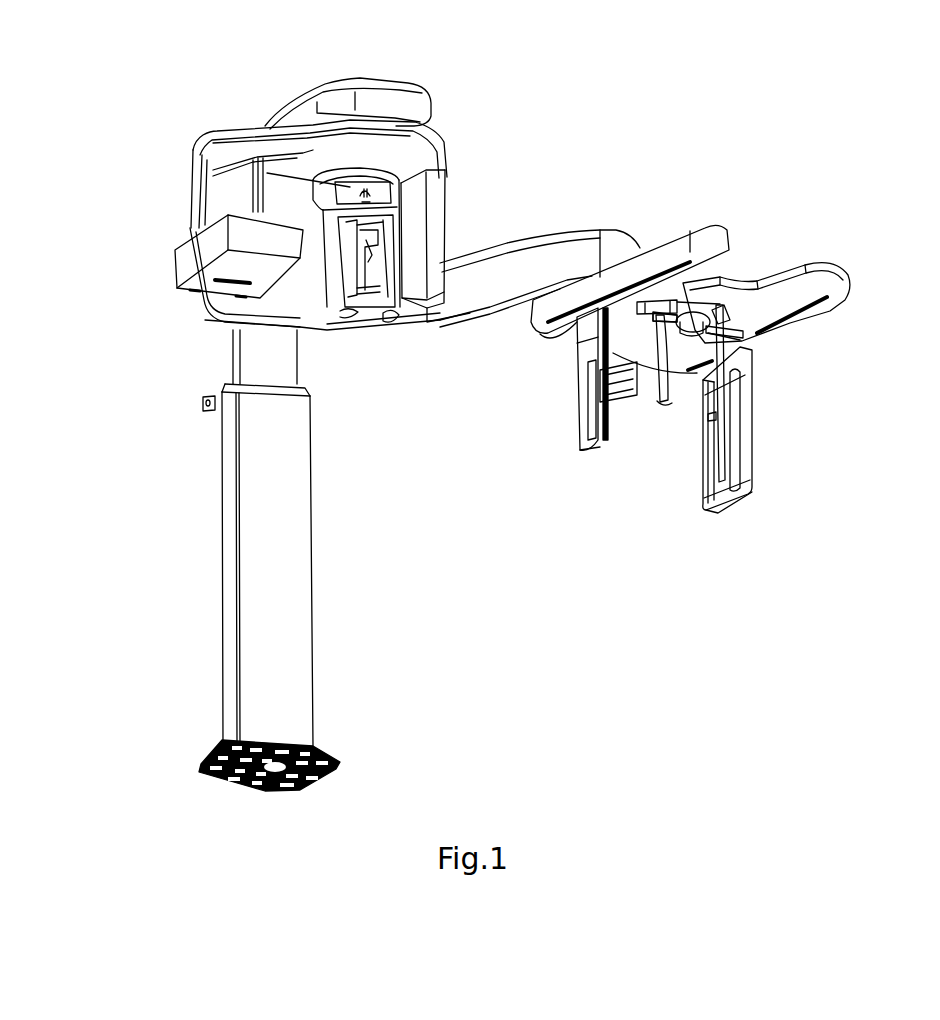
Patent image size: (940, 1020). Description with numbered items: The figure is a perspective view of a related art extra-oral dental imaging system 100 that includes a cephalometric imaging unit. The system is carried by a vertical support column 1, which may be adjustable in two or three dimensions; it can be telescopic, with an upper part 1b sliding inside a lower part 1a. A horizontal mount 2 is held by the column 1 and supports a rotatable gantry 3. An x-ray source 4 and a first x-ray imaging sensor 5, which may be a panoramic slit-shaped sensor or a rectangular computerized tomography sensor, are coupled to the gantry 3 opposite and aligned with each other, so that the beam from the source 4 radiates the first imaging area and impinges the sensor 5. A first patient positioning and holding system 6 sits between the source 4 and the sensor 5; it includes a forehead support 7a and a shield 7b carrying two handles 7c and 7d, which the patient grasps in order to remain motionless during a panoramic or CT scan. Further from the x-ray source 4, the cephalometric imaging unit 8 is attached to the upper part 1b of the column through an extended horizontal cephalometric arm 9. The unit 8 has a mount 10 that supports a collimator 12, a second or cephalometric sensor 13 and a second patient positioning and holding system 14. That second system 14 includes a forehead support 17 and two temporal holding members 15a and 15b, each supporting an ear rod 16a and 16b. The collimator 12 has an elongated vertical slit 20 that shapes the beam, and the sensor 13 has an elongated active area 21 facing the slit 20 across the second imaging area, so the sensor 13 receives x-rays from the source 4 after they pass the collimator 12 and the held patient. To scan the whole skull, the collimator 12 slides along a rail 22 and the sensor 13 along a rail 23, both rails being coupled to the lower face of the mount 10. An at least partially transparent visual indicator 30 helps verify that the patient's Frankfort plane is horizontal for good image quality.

The support column 1 is at (198, 546).
The lower part 1a is at (278, 655).
The upper part 1b is at (262, 356).
The horizontal mount 2 is at (437, 101).
The rotatable gantry 3 is at (437, 151).
The x-ray source 4 is at (193, 260).
The first x-ray imaging sensor 5 is at (440, 217).
The first patient positioning and holding system 6 is at (367, 410).
The forehead support 7a is at (367, 243).
The shield 7b is at (343, 267).
The handle 7c is at (355, 315).
The handle 7d is at (402, 315).
The cephalometric imaging unit 8 is at (762, 217).
The cephalometric arm 9 is at (574, 243).
The mount 10 is at (706, 228).
The collimator 12 is at (579, 375).
The cephalometric sensor 13 is at (750, 470).
The second patient positioning and holding system 14 is at (750, 322).
The temporal holding member 15a is at (663, 350).
The temporal holding member 15b is at (733, 389).
The ear rod 16a is at (670, 394).
The ear rod 16b is at (725, 415).
The forehead support 17 is at (738, 361).
The slit 20 is at (605, 412).
The active area 21 is at (733, 490).
The rail 22 is at (658, 283).
The rail 23 is at (838, 305).
The visual indicator 30 is at (603, 445).
The extra-oral dental imaging system 100 is at (667, 666).